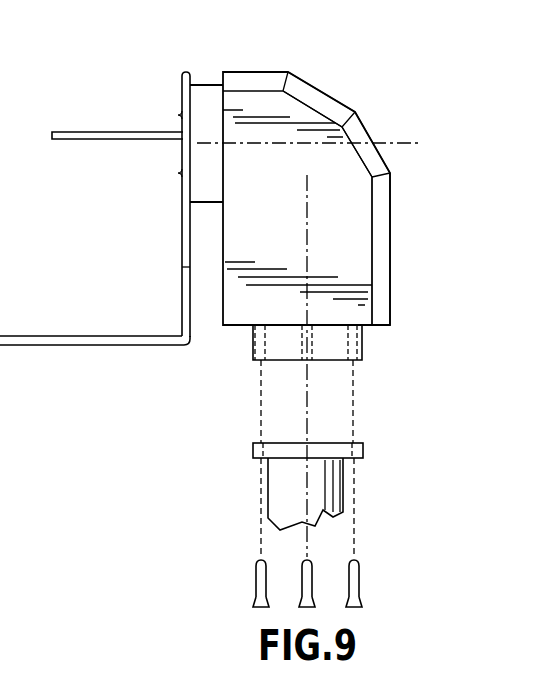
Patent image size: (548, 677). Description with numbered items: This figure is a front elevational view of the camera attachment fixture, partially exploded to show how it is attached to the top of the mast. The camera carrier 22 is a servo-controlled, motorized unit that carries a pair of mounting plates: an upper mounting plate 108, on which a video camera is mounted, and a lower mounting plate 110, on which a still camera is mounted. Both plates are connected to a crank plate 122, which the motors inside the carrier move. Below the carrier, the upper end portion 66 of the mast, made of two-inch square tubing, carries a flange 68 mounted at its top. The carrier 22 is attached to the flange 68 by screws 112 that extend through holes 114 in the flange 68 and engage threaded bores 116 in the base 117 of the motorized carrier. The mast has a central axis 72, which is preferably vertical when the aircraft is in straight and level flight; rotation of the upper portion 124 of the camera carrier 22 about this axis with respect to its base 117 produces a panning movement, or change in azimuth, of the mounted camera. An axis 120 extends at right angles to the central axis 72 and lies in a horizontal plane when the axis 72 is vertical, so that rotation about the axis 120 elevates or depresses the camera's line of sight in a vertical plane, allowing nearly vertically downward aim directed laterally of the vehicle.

The camera carrier 22 is at (333, 83).
The upper end portion of the mast 66 is at (268, 495).
The flange 68 is at (278, 445).
The central axis 72 is at (307, 237).
The upper mounting plate 108 is at (78, 132).
The lower mounting plate 110 is at (49, 336).
The screws 112 is at (258, 580).
The holes 114 is at (365, 448).
The threaded bores 116 is at (246, 352).
The base 117 is at (345, 342).
The axis 120 is at (398, 143).
The crank plate 122 is at (182, 237).
The upper portion of the camera carrier 124 is at (383, 242).